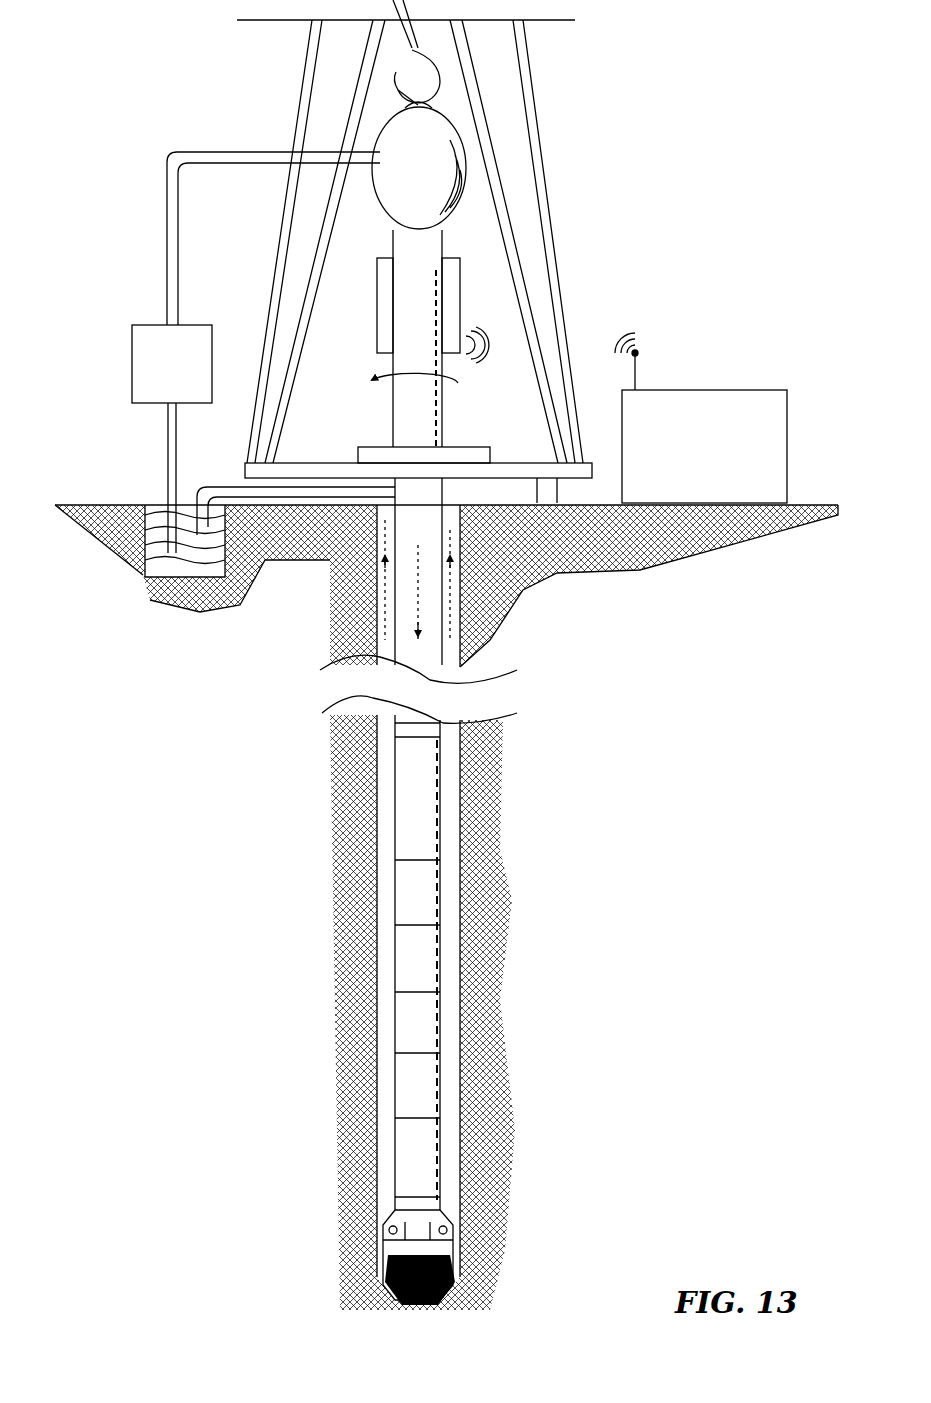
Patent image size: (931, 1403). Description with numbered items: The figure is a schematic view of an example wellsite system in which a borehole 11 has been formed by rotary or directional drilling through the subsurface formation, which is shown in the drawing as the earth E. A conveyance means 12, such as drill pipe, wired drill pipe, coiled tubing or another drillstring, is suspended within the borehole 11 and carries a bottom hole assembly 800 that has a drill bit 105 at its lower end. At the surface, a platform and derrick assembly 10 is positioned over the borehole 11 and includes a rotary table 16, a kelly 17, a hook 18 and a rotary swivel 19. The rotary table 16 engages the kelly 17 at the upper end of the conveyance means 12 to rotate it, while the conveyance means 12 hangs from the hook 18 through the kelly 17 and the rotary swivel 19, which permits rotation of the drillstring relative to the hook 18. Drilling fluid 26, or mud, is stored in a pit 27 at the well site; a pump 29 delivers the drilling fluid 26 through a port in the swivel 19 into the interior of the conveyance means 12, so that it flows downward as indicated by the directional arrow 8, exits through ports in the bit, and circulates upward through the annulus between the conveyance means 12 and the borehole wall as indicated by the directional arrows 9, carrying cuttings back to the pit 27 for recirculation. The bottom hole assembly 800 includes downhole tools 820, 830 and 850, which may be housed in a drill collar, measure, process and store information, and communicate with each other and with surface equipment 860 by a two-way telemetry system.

The platform and derrick assembly 10 is at (562, 120).
The hook 18 is at (435, 72).
The rotary swivel 19 is at (388, 205).
The pump 29 is at (150, 405).
The pit 27 is at (155, 508).
The drilling fluid 26 is at (182, 577).
The kelly 17 is at (392, 417).
The rotary table 16 is at (472, 445).
The borehole 11 is at (382, 510).
The conveyance means 12 is at (443, 525).
The directional arrow 8 is at (417, 603).
The directional arrows 9 is at (378, 578).
The earth formation E is at (446, 907).
The surface equipment 860 is at (705, 392).
The bottom hole assembly 800 is at (431, 1013).
The downhole tool 820 is at (395, 955).
The downhole tool 830 is at (395, 1022).
The downhole tool 850 is at (395, 1152).
The drill bit 105 is at (385, 1252).